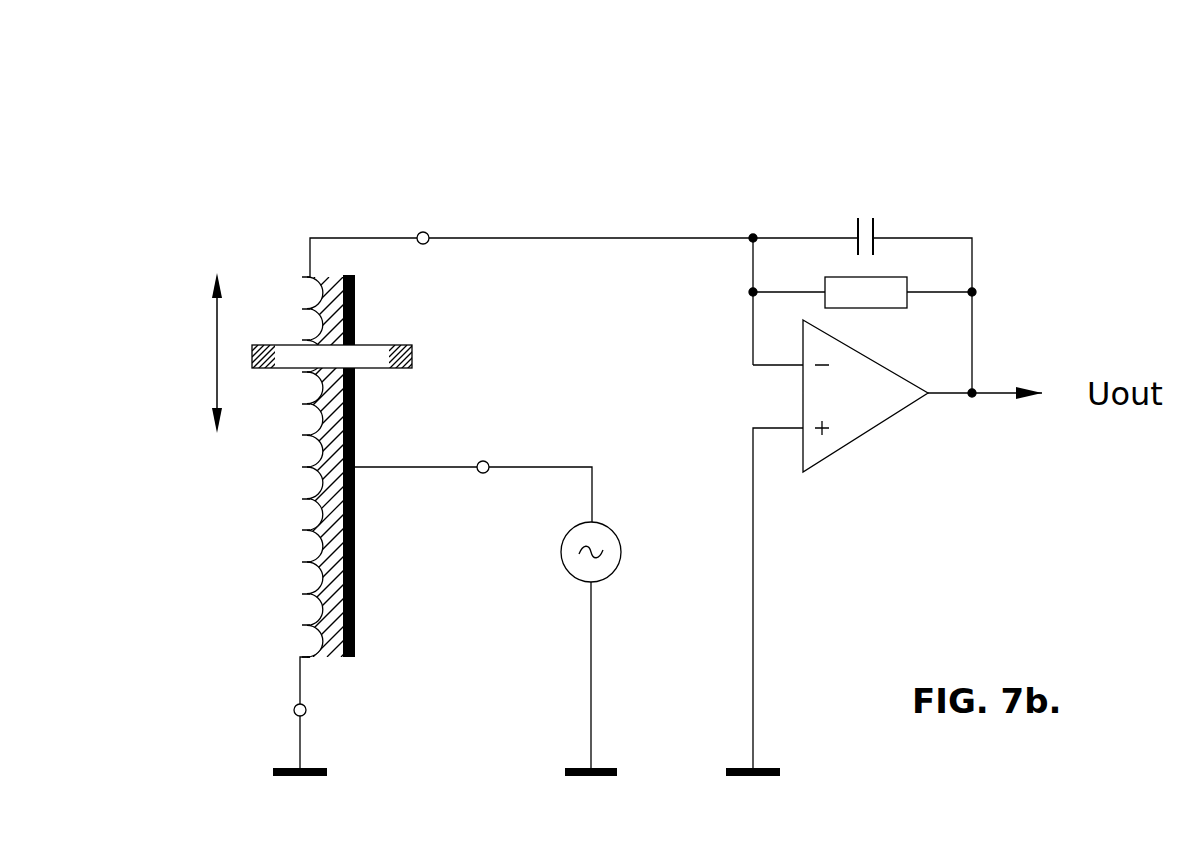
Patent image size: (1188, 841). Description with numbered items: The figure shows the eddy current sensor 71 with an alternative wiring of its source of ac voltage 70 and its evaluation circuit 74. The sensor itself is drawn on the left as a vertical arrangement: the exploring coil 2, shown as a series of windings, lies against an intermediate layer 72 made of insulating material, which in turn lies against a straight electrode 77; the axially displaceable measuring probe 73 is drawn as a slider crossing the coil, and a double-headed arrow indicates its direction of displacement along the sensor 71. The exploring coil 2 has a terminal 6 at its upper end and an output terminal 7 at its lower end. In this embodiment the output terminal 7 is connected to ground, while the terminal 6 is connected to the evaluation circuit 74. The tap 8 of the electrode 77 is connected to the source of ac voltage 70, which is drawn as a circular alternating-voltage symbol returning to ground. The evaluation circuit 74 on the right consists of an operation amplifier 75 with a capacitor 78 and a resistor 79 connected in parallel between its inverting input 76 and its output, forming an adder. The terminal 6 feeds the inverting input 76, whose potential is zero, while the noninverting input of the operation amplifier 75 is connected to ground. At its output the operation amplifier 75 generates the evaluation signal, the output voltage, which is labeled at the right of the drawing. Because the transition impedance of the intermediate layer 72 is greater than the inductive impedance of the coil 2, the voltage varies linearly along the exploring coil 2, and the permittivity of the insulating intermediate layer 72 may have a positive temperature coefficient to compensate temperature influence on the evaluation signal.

The exploring coil 2 is at (303, 562).
The terminal 6 is at (531, 235).
The output terminal 7 is at (294, 716).
The tap 8 is at (473, 493).
The source of ac voltage 70 is at (555, 563).
The eddy current sensor 71 is at (268, 223).
The intermediate layer 72 is at (318, 503).
The measuring probe 73 is at (414, 355).
The evaluation circuit 74 is at (742, 182).
The operation amplifier 75 is at (857, 403).
The inverting input 76 is at (787, 382).
The electrode 77 is at (353, 627).
The capacitor 78 is at (885, 220).
The resistor 79 is at (920, 283).